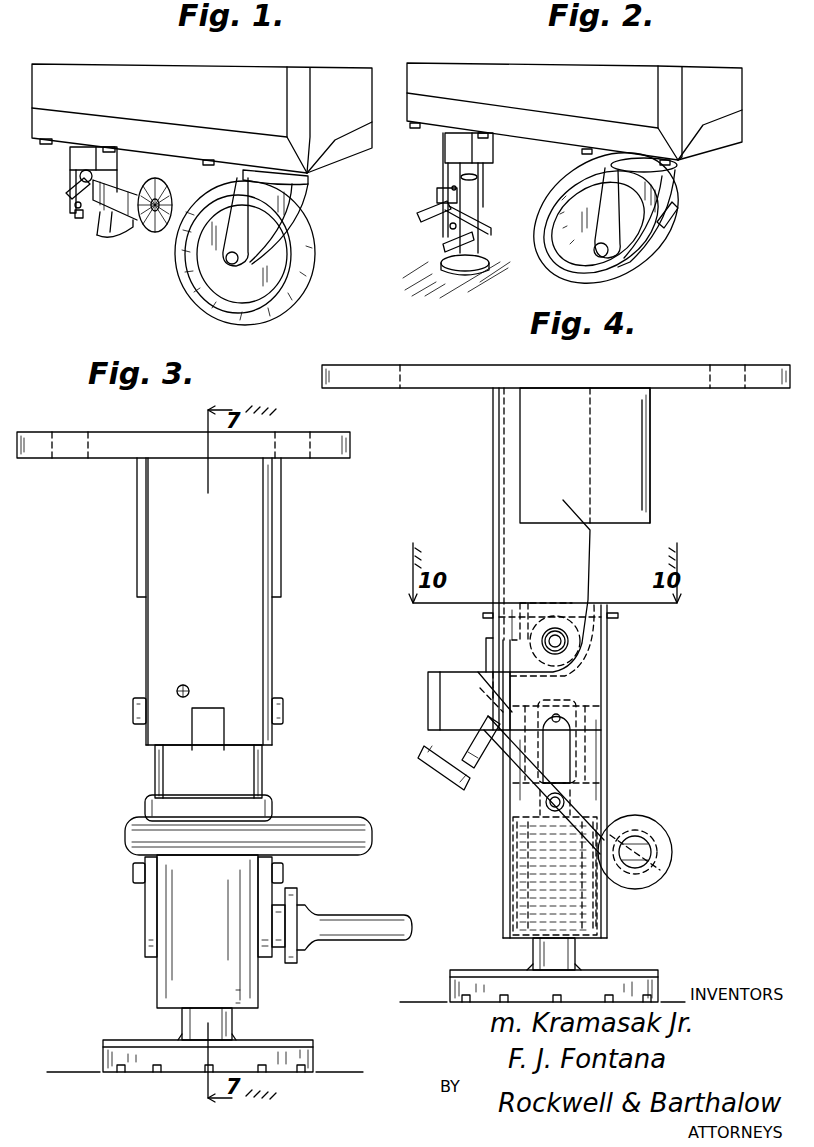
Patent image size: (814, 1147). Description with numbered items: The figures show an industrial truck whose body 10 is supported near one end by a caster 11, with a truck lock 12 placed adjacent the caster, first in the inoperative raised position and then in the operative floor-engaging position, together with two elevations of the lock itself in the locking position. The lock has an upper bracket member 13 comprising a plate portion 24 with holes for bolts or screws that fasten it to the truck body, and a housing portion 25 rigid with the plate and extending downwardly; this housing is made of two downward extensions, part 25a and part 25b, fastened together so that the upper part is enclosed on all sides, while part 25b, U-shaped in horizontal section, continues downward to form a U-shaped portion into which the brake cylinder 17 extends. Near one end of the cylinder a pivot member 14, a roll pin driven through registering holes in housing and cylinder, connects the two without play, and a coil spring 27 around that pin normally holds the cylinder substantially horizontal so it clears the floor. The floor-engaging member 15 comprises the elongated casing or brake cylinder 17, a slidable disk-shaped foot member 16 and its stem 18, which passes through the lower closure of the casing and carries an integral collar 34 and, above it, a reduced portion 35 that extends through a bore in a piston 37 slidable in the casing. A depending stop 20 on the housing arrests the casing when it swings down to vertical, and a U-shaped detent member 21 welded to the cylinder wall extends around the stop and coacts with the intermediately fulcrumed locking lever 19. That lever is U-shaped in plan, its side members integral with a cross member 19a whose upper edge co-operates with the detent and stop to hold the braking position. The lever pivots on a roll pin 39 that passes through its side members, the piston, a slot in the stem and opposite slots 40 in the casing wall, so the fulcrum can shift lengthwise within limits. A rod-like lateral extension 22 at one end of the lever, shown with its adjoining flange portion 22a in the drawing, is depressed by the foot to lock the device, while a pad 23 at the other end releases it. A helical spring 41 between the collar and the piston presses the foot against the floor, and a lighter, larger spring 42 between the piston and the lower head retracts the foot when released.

In FIG. 1, the body 10 is at (125, 84).
In FIG. 2, the body 10 is at (645, 80).
In FIG. 1, the caster 11 is at (292, 240).
In FIG. 2, the caster 11 is at (668, 210).
In FIG. 1, the truck lock 12 is at (76, 206).
In FIG. 2, the truck lock 12 is at (474, 214).
In FIG. 3, the upper bracket member 13 is at (258, 541).
In FIG. 4, the upper bracket member 13 is at (492, 460).
In FIG. 3, the pivot member 14 is at (133, 710).
In FIG. 4, the pivot member 14 is at (555, 628).
In FIG. 3, the floor-engaging member 15 is at (182, 923).
In FIG. 4, the floor-engaging member 15 is at (612, 674).
In FIG. 3, the slidable foot member 16 is at (118, 1046).
In FIG. 4, the slidable foot member 16 is at (478, 960).
In FIG. 3, the elongated casing or brake cylinder 17 is at (236, 996).
In FIG. 4, the elongated casing or brake cylinder 17 is at (596, 710).
In FIG. 3, the stem 18 is at (197, 1025).
In FIG. 4, the stem 18 is at (566, 953).
In FIG. 3, the intermediately fulcrumed locking lever 19 is at (151, 895).
In FIG. 4, the intermediately fulcrumed locking lever 19 is at (612, 818).
In FIG. 4, the cross member 19a is at (478, 742).
In FIG. 3, the depending stop 20 is at (216, 728).
In FIG. 4, the depending stop 20 is at (485, 652).
In FIG. 3, the detent member 21 is at (230, 776).
In FIG. 4, the detent member 21 is at (440, 688).
In FIG. 3, the rod-like lateral extension 22 is at (360, 921).
In FIG. 4, the rod-like lateral extension 22 is at (644, 850).
In FIG. 3, the hand wheel flange 22a is at (290, 903).
In FIG. 4, the hand wheel flange 22a is at (652, 824).
In FIG. 3, the pad 23 is at (320, 836).
In FIG. 4, the pad 23 is at (447, 768).
In FIG. 3, the plate portion 24 is at (43, 443).
In FIG. 4, the plate portion 24 is at (700, 380).
In FIG. 3, the housing portion 25 is at (157, 558).
In FIG. 4, the housing portion 25 is at (640, 456).
In FIG. 4, the downward extension or part 25a is at (572, 586).
In FIG. 4, the downward extension or part 25b is at (505, 512).
In FIG. 4, the coil spring 27 is at (531, 612).
In FIG. 4, the collar 34 is at (513, 906).
In FIG. 4, the reduced stem portion 35 is at (576, 770).
In FIG. 4, the piston 37 is at (552, 728).
In FIG. 3, the roll pin 39 is at (133, 871).
In FIG. 4, the roll pin 39 is at (546, 803).
In FIG. 4, the slots 40 is at (558, 716).
In FIG. 4, the helical spring 41 is at (513, 872).
In FIG. 4, the lighter spring 42 is at (601, 911).